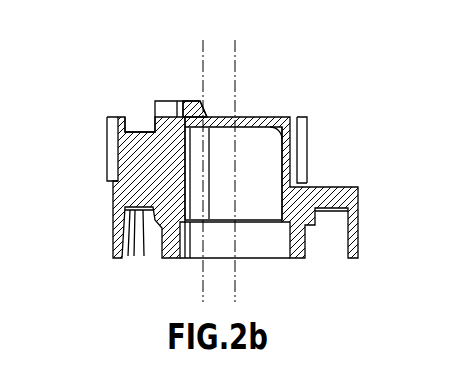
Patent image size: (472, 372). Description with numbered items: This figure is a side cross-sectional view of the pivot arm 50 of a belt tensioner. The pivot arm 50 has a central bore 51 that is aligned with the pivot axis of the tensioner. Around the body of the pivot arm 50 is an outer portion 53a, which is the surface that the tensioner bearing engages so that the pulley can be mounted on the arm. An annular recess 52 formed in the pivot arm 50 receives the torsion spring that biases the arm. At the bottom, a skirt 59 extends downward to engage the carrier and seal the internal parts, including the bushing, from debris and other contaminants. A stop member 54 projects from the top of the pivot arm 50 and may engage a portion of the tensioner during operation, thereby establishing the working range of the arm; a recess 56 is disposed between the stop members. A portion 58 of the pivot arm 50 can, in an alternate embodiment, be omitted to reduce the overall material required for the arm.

The pivot arm 50 is at (369, 177).
The bore 51 is at (270, 178).
The annular recess 52 is at (149, 242).
The outer portion 53a is at (107, 151).
The stop member 54 is at (172, 100).
The recess 56 is at (143, 116).
The portion 58 is at (277, 131).
The skirt 59 is at (298, 258).